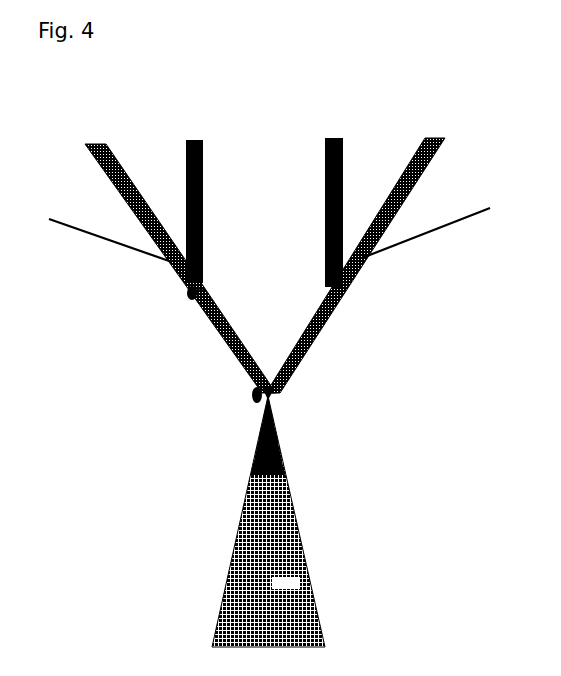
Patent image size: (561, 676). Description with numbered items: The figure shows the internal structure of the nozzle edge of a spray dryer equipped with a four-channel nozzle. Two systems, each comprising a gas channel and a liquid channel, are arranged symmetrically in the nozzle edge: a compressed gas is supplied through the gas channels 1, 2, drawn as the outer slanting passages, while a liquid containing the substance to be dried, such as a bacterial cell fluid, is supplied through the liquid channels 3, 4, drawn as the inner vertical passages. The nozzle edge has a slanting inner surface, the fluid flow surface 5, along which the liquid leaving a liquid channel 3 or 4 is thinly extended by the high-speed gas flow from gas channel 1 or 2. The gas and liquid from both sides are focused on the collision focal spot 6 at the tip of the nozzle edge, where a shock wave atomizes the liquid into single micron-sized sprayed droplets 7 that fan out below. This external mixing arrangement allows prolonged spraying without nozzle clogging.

The gas channel 1 is at (95, 137).
The gas channel 2 is at (437, 137).
The liquid channel 3 is at (189, 137).
The liquid channel 4 is at (329, 137).
The fluid flow surface 5 is at (223, 351).
The collision focal spot 6 is at (283, 393).
The sprayed droplets 7 is at (305, 537).